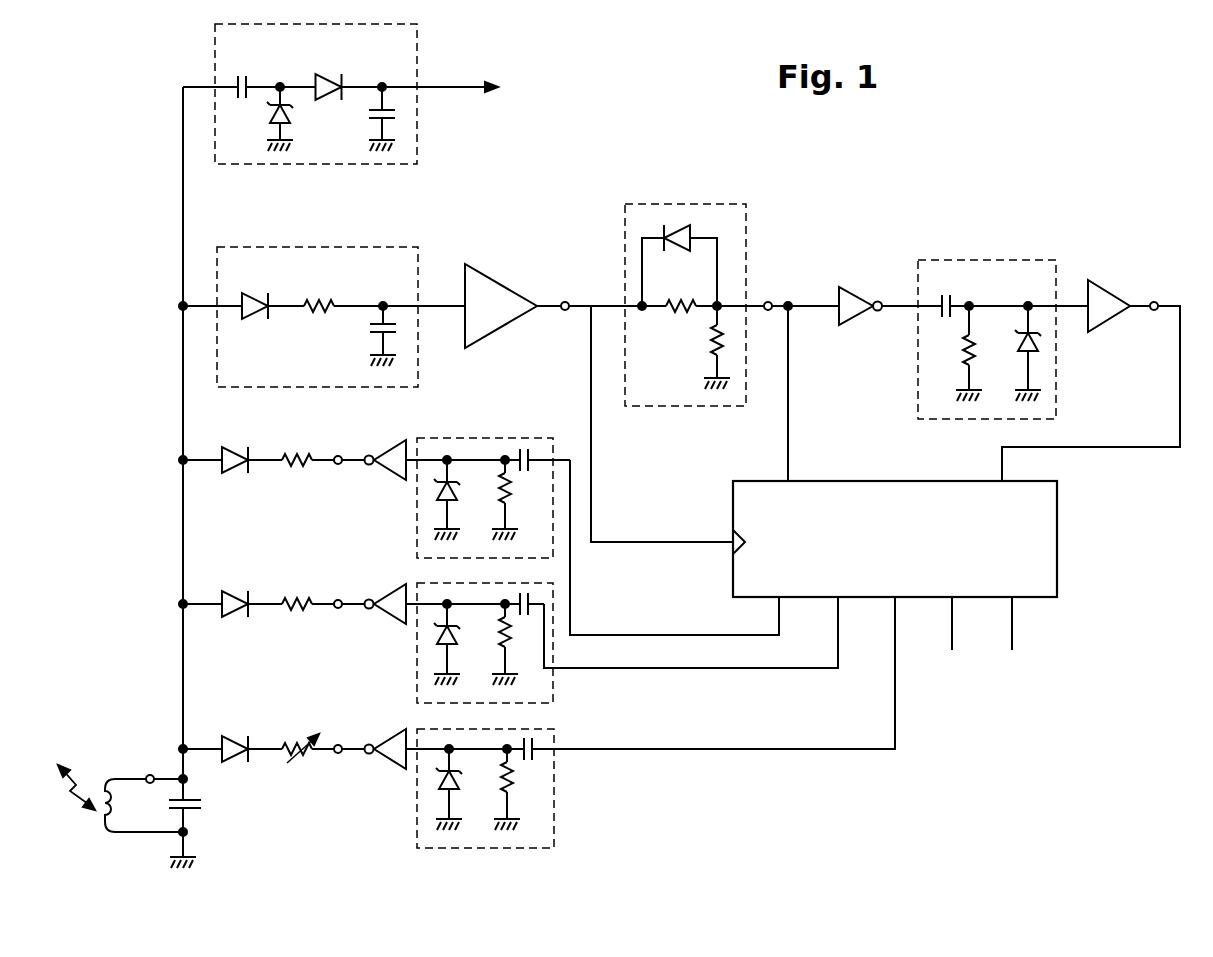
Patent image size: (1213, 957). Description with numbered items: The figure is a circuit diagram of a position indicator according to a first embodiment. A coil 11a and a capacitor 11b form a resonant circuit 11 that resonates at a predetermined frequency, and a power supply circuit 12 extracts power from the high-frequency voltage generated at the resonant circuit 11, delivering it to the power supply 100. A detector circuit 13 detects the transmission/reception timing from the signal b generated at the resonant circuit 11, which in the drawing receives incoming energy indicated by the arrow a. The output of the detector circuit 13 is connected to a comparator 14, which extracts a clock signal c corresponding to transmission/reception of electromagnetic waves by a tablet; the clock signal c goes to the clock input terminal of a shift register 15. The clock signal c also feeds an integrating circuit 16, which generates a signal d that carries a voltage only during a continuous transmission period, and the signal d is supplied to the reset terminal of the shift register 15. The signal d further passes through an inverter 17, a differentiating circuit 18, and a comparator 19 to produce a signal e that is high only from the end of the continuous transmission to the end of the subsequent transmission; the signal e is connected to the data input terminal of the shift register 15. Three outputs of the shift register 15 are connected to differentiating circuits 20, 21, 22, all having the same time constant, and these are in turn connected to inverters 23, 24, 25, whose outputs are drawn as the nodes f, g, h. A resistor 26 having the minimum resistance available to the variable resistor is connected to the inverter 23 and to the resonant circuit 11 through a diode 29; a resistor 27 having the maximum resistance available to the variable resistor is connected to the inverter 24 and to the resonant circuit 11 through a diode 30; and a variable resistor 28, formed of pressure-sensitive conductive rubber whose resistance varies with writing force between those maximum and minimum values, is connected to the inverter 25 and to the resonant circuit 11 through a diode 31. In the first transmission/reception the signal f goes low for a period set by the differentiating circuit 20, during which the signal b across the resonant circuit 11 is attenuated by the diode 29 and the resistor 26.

The resonant circuit 11 is at (157, 826).
The coil 11a is at (103, 823).
The capacitor 11b is at (202, 805).
The power supply circuit 12 is at (417, 120).
The detector circuit 13 is at (418, 265).
The comparator 14 is at (498, 275).
The shift register 15 is at (1057, 548).
The integrating circuit 16 is at (648, 204).
The inverter 17 is at (857, 287).
The differentiating circuit 18 is at (952, 260).
The comparator 19 is at (1108, 288).
The differentiating circuit 20 is at (497, 438).
The differentiating circuit 21 is at (554, 690).
The differentiating circuit 22 is at (554, 810).
The inverter 23 is at (384, 478).
The inverter 24 is at (385, 620).
The inverter 25 is at (384, 760).
The resistor 26 is at (295, 470).
The resistor 27 is at (295, 615).
The variable resistor 28 is at (303, 765).
The diode 29 is at (225, 445).
The diode 30 is at (232, 592).
The diode 31 is at (232, 735).
The power supply 100 is at (511, 61).
The light signal a is at (76, 785).
The signal b is at (150, 774).
The clock signal c is at (565, 300).
The signal d is at (768, 300).
The signal e is at (1154, 300).
The signal f is at (338, 468).
The node g is at (338, 612).
The node h is at (340, 757).